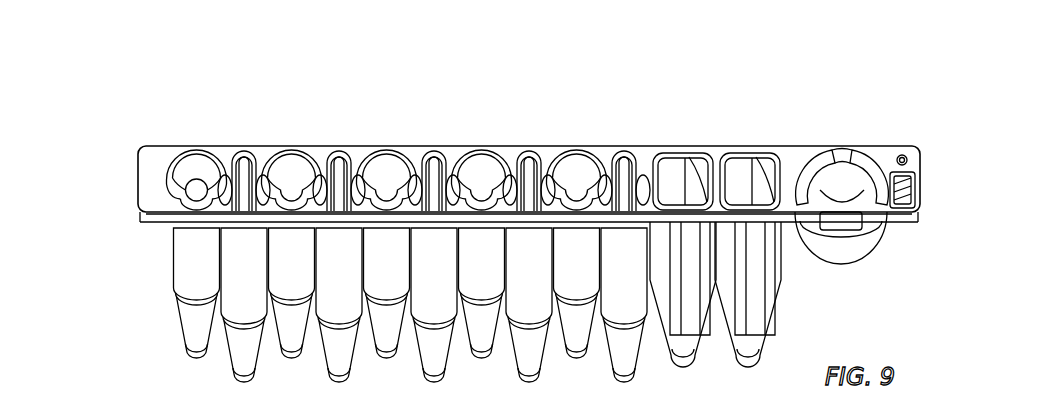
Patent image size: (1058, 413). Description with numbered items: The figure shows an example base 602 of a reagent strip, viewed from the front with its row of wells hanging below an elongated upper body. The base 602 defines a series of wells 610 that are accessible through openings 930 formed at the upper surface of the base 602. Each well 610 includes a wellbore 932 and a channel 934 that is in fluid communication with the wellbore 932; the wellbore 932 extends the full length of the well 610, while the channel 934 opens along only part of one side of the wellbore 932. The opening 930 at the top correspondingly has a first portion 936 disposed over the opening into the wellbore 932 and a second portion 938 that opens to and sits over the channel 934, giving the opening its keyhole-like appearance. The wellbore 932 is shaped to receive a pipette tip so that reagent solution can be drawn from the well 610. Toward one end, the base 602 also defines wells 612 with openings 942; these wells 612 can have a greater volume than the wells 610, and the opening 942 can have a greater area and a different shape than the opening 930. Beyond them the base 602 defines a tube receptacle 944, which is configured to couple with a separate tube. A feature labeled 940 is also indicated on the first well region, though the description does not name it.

The base 602 is at (497, 172).
The wells 610 is at (197, 332).
The wells 612 is at (767, 302).
The opening 930 is at (178, 226).
The wellbore 932 is at (197, 171).
The channel 934 is at (208, 186).
The first portion 936 is at (204, 156).
The second portion 938 is at (189, 205).
The receptacle side wall 940 is at (169, 173).
The openings 942 is at (680, 165).
The tube receptacle 944 is at (842, 157).